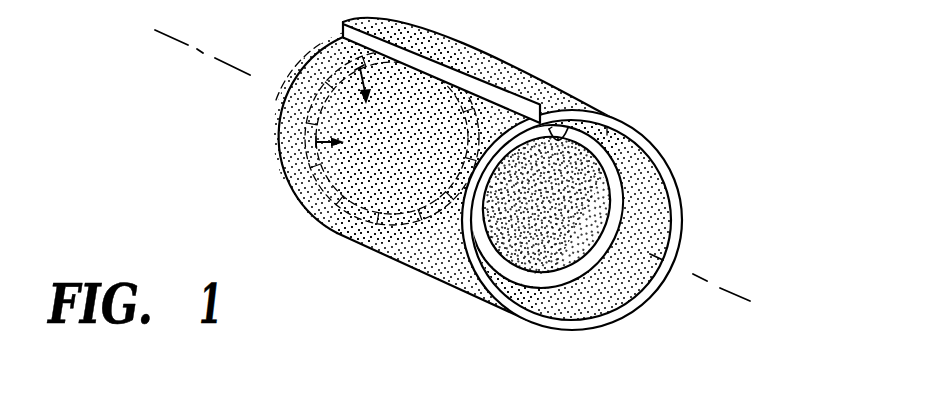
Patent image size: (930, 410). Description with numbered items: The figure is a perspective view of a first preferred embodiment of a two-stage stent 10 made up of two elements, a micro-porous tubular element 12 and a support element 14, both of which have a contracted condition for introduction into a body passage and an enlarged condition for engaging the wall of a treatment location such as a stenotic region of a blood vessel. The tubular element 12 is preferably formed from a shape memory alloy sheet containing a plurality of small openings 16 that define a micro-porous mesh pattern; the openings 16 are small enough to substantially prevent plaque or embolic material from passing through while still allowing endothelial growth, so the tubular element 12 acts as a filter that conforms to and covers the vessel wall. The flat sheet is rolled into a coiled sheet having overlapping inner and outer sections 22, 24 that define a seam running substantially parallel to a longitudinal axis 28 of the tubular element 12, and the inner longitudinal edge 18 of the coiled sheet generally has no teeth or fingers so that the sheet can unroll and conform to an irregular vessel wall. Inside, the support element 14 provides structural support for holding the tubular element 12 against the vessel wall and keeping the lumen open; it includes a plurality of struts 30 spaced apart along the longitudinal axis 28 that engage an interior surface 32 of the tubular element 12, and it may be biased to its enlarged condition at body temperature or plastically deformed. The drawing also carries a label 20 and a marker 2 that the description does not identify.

The stent 10 is at (202, 134).
The micro-porous tubular element 12 is at (680, 183).
The support element 14 is at (581, 280).
The openings 16 is at (363, 175).
The inner longitudinal edge 18 is at (620, 135).
The longitudinal slot 20 is at (482, 63).
The inner section 22 is at (575, 128).
The outer section 24 is at (550, 127).
The longitudinal axis 28 is at (733, 290).
The struts 30 is at (313, 172).
The interior surface 32 is at (650, 227).
The section line 2- 2 is at (343, 106).